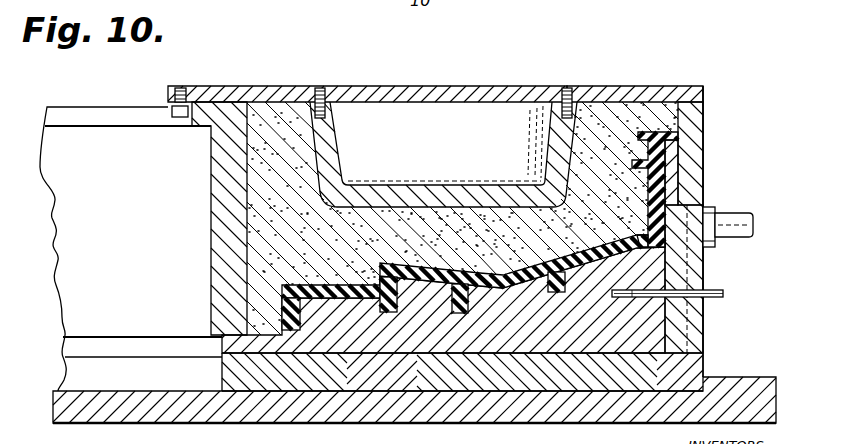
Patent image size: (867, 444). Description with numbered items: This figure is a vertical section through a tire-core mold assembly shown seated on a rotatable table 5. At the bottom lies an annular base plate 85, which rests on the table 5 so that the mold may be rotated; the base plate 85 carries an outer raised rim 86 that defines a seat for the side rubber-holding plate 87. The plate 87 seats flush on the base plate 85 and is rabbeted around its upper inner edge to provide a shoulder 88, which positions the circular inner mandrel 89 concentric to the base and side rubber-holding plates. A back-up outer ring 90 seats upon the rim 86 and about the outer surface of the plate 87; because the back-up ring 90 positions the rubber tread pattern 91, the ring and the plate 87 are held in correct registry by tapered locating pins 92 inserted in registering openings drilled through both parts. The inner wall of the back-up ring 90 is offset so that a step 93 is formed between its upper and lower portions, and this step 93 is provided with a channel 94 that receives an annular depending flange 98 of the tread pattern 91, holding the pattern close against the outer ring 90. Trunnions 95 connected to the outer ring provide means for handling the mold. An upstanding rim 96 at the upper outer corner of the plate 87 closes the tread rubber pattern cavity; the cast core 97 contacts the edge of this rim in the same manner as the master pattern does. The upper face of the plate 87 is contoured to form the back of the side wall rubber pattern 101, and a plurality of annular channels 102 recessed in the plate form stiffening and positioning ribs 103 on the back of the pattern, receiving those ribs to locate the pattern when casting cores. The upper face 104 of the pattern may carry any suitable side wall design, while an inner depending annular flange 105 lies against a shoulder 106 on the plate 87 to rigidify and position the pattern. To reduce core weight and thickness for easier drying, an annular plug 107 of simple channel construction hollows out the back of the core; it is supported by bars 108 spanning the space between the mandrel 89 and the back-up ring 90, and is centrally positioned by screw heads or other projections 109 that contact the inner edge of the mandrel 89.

The table 5 is at (277, 410).
The base plate 85 is at (340, 378).
The outer raised rim 86 is at (674, 350).
The side rubber-holding plate 87 is at (423, 338).
The shoulder 88 is at (247, 340).
The inner mandrel 89 is at (211, 270).
The back-up outer ring 90 is at (690, 276).
The rubber tread pattern 91 is at (708, 209).
The tapered locating pins 92 is at (712, 298).
The step 93 is at (698, 138).
The channel 94 is at (680, 153).
The trunnions 95 is at (736, 218).
The upstanding rim 96 is at (654, 245).
The cast core 97 is at (614, 110).
The depending flange 98 is at (680, 176).
The side wall rubber pattern 101 is at (535, 260).
The annular channels 102 is at (505, 292).
The stiffening and positioning ribs 103 is at (616, 263).
The upper face 104 is at (508, 270).
The inner depending annular flange 105 is at (284, 296).
The shoulder 106 is at (303, 331).
The annular plug 107 is at (338, 175).
The bars 108 is at (278, 96).
The projections 109 is at (183, 118).